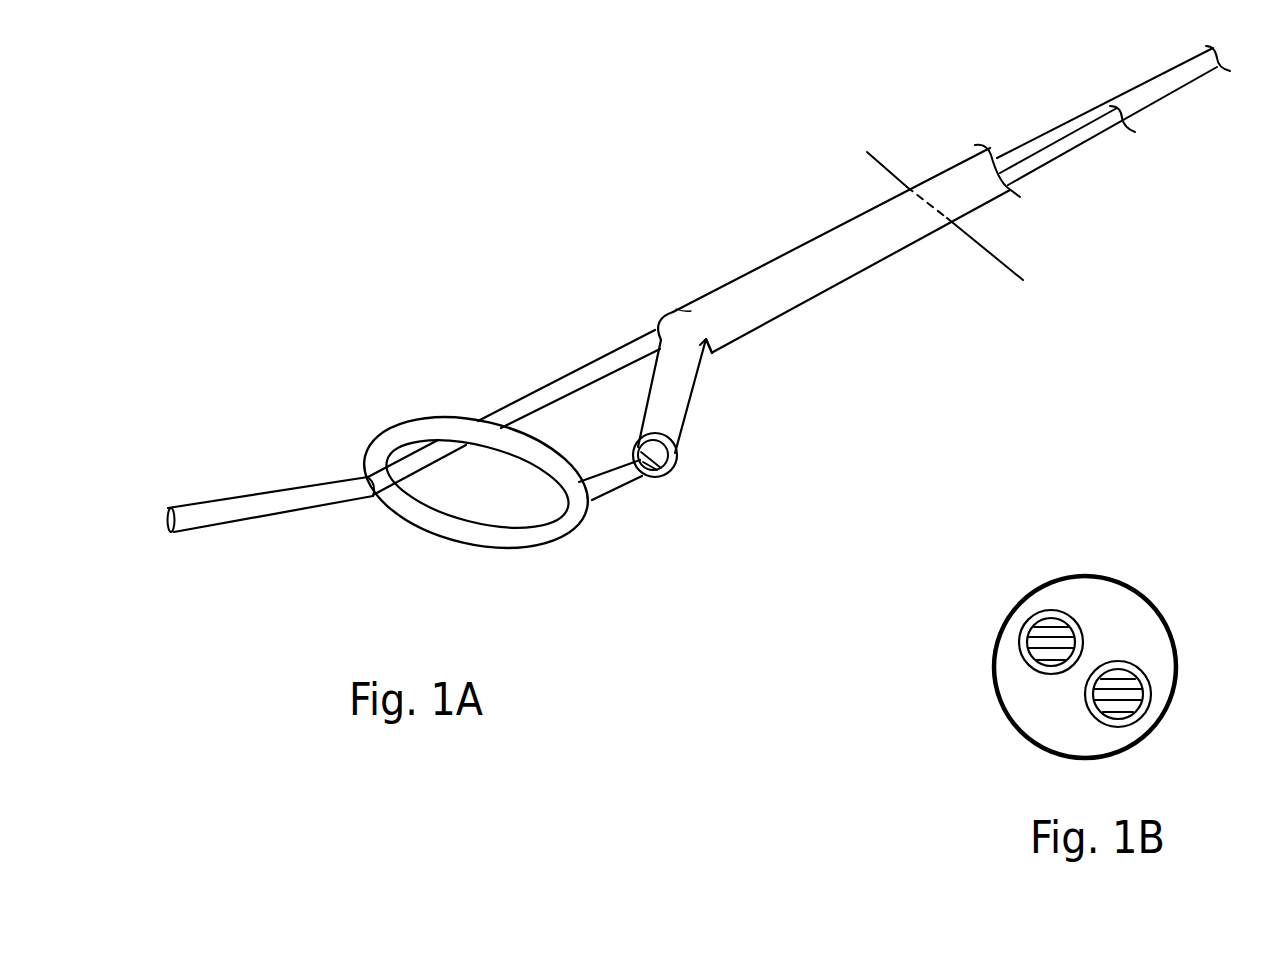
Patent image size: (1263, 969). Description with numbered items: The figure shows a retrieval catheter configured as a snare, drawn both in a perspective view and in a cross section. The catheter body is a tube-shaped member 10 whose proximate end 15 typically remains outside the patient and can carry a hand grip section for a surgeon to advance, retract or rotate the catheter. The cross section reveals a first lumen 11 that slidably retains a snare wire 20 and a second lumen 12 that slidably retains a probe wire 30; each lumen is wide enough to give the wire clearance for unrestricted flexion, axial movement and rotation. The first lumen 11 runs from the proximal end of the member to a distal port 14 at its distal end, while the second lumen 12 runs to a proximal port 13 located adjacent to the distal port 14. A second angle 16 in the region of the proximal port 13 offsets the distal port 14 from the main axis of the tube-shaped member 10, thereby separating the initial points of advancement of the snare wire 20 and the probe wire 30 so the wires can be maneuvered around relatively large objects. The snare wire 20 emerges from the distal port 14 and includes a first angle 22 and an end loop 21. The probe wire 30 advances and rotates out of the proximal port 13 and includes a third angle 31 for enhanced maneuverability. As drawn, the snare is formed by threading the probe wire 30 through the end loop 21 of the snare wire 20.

In FIG. 1A, the tube-shaped member 10 is at (777, 252).
In FIG. 1B, the tube-shaped member 10 is at (1140, 592).
In FIG. 1B, the first lumen 11 is at (1140, 715).
In FIG. 1B, the second lumen 12 is at (1033, 663).
In FIG. 1A, the proximal port 13 is at (653, 328).
In FIG. 1A, the distal port 14 is at (676, 462).
In FIG. 1A, the proximate end 15 is at (1010, 230).
In FIG. 1A, the second angle 16 is at (709, 352).
In FIG. 1A, the snare wire 20 is at (613, 497).
In FIG. 1B, the snare wire 20 is at (1136, 673).
In FIG. 1A, the end loop 21 is at (510, 538).
In FIG. 1A, the first angle 22 is at (651, 478).
In FIG. 1A, the probe wire 30 is at (275, 503).
In FIG. 1B, the probe wire 30 is at (1048, 635).
In FIG. 1A, the third angle 31 is at (370, 498).